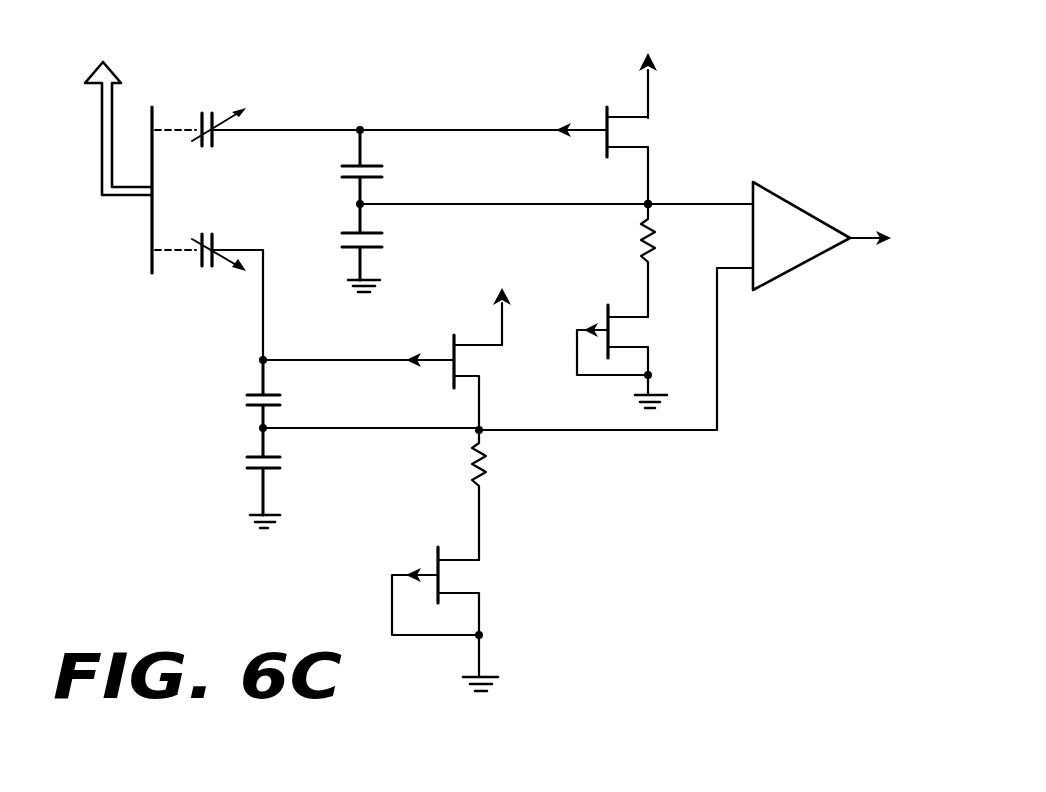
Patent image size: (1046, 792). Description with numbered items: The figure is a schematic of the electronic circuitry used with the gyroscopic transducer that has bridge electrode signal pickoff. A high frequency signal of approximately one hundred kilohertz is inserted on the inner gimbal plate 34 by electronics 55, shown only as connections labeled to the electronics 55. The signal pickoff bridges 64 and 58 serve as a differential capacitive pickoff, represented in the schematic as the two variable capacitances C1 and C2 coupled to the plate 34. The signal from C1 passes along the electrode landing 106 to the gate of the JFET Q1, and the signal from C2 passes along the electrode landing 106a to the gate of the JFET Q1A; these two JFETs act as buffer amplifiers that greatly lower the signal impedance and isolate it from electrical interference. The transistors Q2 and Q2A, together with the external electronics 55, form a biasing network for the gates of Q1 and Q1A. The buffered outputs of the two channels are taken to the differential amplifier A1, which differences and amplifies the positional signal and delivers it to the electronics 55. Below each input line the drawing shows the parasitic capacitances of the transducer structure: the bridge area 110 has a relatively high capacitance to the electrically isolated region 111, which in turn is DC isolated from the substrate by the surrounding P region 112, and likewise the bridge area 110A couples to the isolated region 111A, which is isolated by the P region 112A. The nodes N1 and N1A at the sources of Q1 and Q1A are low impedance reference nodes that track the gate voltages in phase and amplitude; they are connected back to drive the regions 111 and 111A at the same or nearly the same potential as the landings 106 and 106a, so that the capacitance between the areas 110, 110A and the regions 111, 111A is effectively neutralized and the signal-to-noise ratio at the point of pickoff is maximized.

The inner gimbal plate 34 is at (150, 231).
The electronics 55 is at (491, 189).
The signal pickoff bridge 64 is at (271, 114).
The electrode landing 106 is at (260, 130).
The signal pickoff bridge 58 is at (269, 236).
The electrode landing 106a is at (265, 312).
The bridge area 110 is at (385, 167).
The electrical isolation region 111 is at (554, 215).
The P region 112 is at (385, 248).
The bridge area 110A is at (350, 390).
The electrical isolation region 111A is at (369, 418).
The P region 112A is at (289, 478).
The pickoff capacitance C1 is at (200, 141).
The pickoff capacitance C2 is at (200, 264).
The JFET Q1 is at (643, 155).
The transistor Q2 is at (627, 306).
The JFET Q1A is at (488, 382).
The transistor Q2A is at (458, 560).
The reference node N1 is at (651, 201).
The reference node N1A is at (481, 426).
The differential amplifier A1 is at (664, 306).